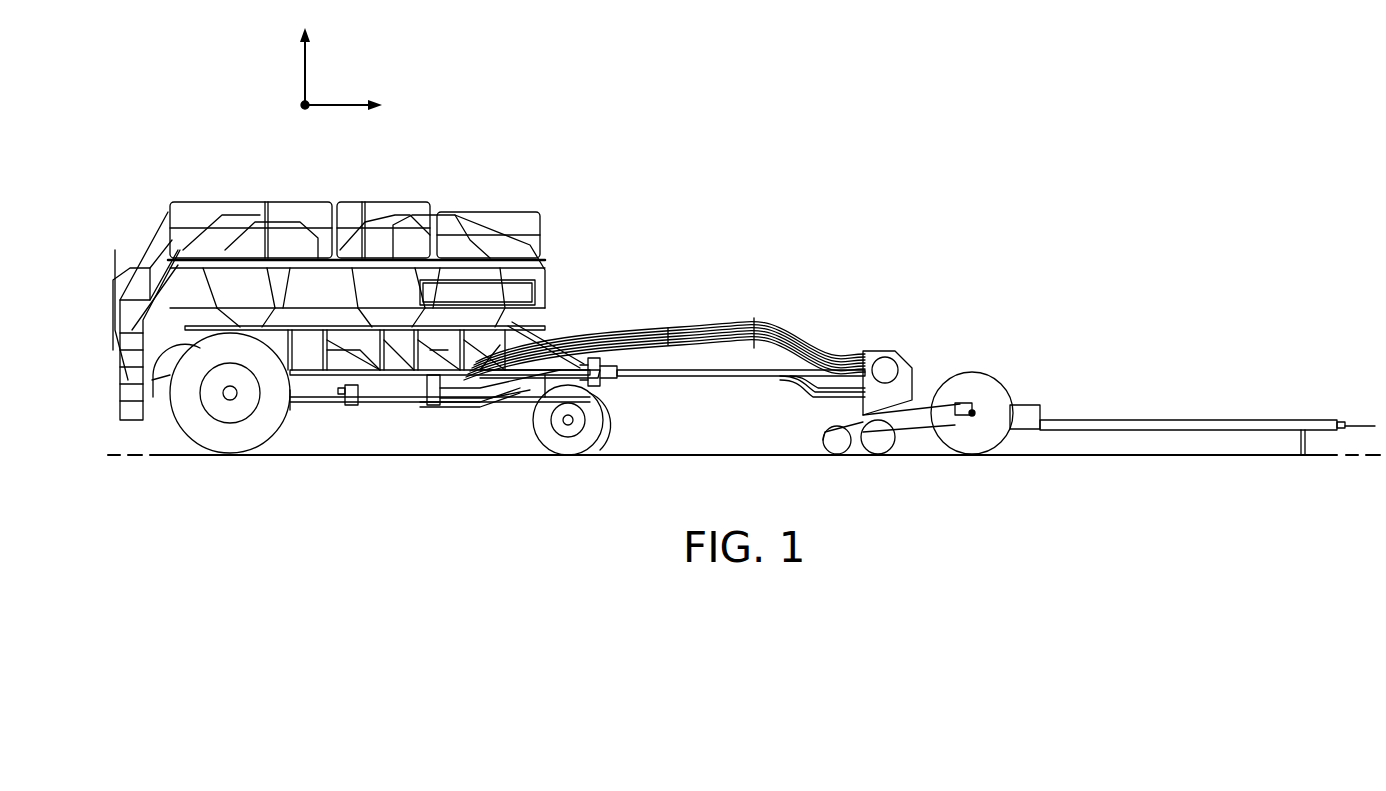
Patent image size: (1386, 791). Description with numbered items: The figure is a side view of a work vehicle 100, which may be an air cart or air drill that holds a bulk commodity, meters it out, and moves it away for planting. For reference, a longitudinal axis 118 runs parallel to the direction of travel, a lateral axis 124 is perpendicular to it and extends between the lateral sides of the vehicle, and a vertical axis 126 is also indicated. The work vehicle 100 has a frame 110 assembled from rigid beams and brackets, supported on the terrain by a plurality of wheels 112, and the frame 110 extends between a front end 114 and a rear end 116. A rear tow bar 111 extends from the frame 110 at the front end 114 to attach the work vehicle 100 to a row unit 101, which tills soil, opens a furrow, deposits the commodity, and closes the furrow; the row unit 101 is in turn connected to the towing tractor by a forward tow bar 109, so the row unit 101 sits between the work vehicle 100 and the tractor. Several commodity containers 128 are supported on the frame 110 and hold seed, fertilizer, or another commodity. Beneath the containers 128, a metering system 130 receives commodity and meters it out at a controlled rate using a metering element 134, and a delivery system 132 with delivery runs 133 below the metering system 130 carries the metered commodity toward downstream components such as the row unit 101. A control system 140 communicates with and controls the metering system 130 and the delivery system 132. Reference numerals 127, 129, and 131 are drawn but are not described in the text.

The work vehicle 100 is at (213, 165).
The row unit 101 is at (1012, 372).
The forward tow bar 109 is at (1137, 420).
The frame 110 is at (528, 342).
The rear tow bar 111 is at (722, 378).
The wheels 112 is at (232, 455).
The front end 114 is at (604, 356).
The rear end 116 is at (117, 330).
The longitudinal axis 118 is at (337, 105).
The lateral axis 124 is at (305, 105).
The vertical axis 126 is at (305, 70).
The bracket 127 is at (370, 390).
The commodity container 128 is at (260, 242).
The metering assembly 129 is at (470, 408).
The metering system 130 is at (320, 370).
The tractor 131 is at (883, 357).
The delivery system 132 is at (473, 410).
The delivery run 133 is at (508, 392).
The metering element 134 is at (798, 400).
The control system 140 is at (535, 293).